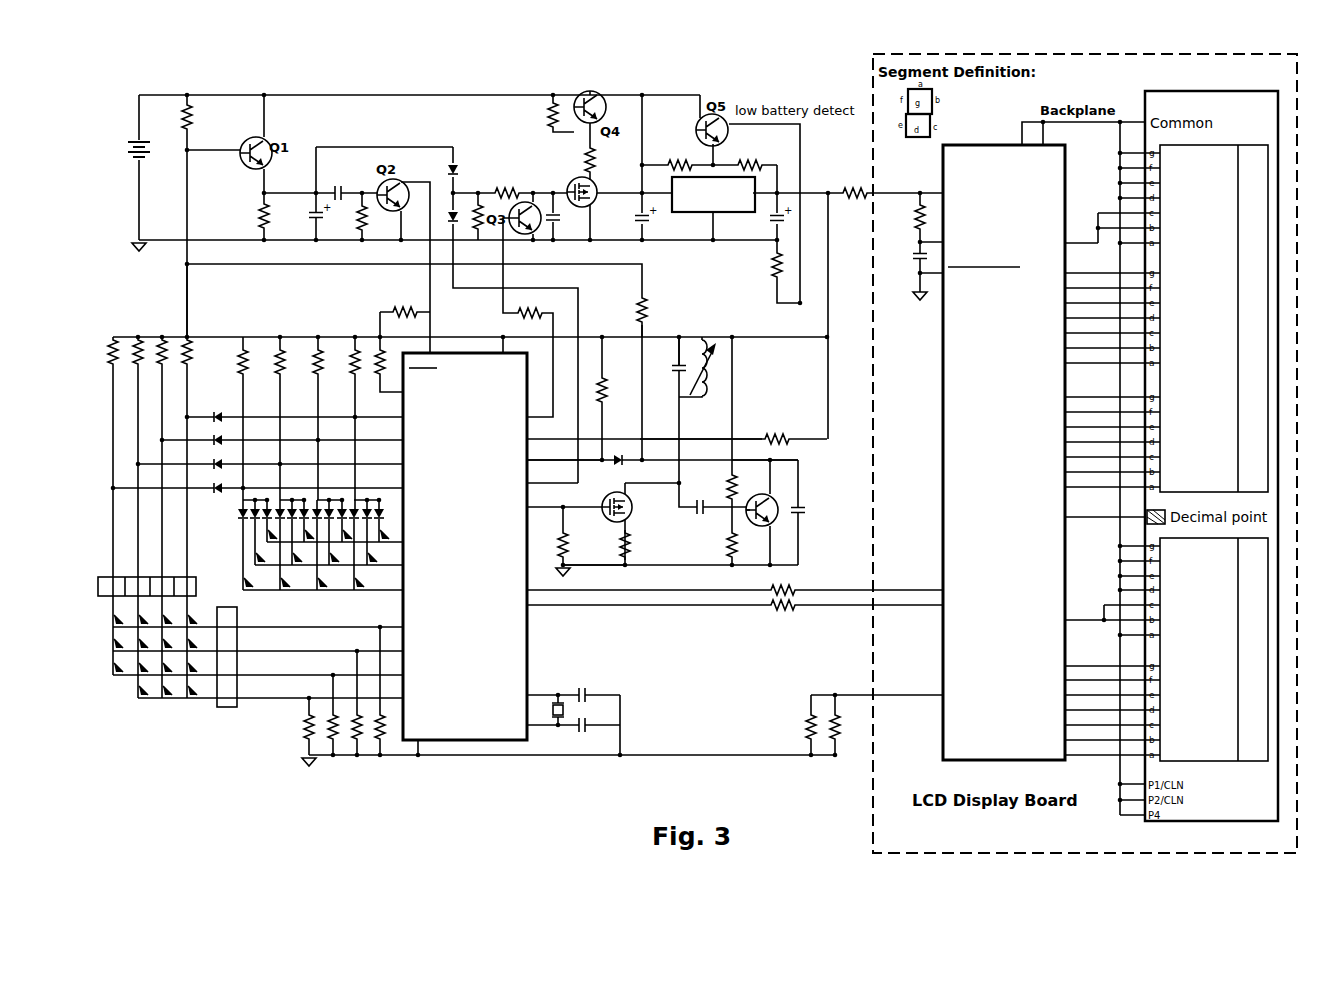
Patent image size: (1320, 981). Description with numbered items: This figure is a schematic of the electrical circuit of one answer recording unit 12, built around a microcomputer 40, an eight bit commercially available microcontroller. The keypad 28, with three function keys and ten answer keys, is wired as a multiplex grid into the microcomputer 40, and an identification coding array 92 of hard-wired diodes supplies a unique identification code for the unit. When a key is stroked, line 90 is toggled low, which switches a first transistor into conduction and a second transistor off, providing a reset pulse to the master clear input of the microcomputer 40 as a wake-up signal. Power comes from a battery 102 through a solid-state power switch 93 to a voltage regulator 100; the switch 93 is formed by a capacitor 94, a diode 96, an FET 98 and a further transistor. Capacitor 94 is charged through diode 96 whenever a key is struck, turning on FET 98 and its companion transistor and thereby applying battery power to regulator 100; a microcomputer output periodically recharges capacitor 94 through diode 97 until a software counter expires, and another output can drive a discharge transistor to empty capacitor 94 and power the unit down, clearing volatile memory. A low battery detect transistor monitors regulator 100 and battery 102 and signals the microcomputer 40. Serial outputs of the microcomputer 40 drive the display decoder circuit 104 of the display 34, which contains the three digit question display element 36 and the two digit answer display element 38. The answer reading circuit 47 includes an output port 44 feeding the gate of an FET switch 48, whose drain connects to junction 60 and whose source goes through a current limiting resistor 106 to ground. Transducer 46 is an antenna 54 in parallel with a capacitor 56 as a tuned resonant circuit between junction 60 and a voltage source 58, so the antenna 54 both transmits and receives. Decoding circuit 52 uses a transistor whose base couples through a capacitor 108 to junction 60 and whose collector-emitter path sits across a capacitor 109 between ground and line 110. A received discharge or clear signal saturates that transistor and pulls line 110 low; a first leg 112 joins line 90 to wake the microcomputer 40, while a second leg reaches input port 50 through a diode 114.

The answer recording unit 12 is at (683, 685).
The keypad 28 is at (136, 675).
The display 34 is at (1117, 54).
The question display element 36 is at (1228, 143).
The answer display element 38 is at (1197, 762).
The microcomputer 40 is at (467, 740).
The output port 44 is at (530, 508).
The transducer 46 is at (672, 429).
The answer reading circuit 47 is at (637, 565).
The switch 48 is at (631, 514).
The input port 50 is at (530, 460).
The decoding circuit 52 is at (720, 549).
The antenna 54 is at (707, 368).
The capacitor 56 is at (673, 364).
The voltage source 58 is at (667, 336).
The junction 60 is at (682, 437).
The line 90 is at (188, 328).
The identification coding array 92 is at (244, 558).
The solid-state power switch 93 is at (516, 84).
The capacitor 94 is at (557, 226).
The diode 96 is at (455, 166).
The diode 97 is at (456, 213).
The FET 98 is at (592, 206).
The voltage regulator 100 is at (713, 214).
The battery 102 is at (134, 143).
The display decoder circuit 104 is at (1013, 143).
The current limiting resistor 106 is at (633, 543).
The capacitor 108 is at (705, 502).
The capacitor 109 is at (805, 516).
The line 110 is at (735, 458).
The first leg 112 is at (645, 297).
The diode 114 is at (622, 462).